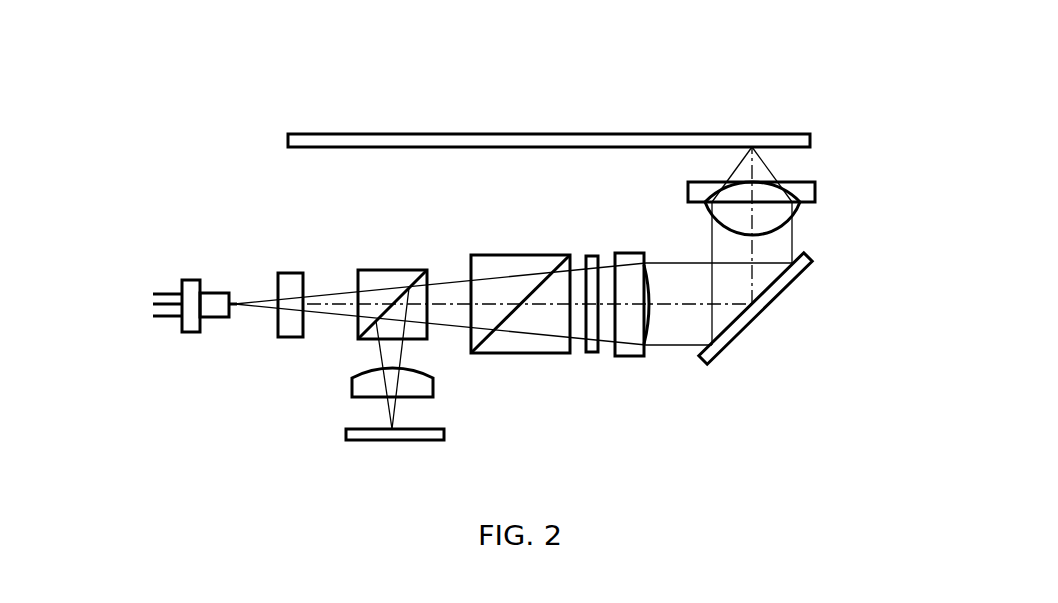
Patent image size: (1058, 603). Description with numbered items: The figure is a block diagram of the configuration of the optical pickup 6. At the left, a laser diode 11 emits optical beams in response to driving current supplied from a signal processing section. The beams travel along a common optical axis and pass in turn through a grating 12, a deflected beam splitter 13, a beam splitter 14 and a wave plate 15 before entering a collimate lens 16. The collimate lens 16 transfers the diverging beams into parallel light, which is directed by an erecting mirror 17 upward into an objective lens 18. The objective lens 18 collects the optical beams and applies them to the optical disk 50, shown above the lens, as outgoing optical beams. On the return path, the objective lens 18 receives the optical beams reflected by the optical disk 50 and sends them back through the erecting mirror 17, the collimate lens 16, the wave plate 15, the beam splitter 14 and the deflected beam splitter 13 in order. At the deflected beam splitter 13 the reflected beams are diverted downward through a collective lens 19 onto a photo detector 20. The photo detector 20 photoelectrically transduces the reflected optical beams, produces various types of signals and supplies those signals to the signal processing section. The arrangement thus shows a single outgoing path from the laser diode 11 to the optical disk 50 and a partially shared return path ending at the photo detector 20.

The optical pickup 6 is at (202, 77).
The laser diode 11 is at (190, 280).
The grating 12 is at (289, 273).
The deflected beam splitter 13 is at (391, 270).
The beam splitter 14 is at (519, 255).
The wave plate 15 is at (591, 256).
The collimate lens 16 is at (627, 253).
The erecting mirror 17 is at (740, 332).
The objective lens 18 is at (815, 192).
The collective lens 19 is at (433, 386).
The photo detector 20 is at (444, 434).
The optical disk 50 is at (665, 134).